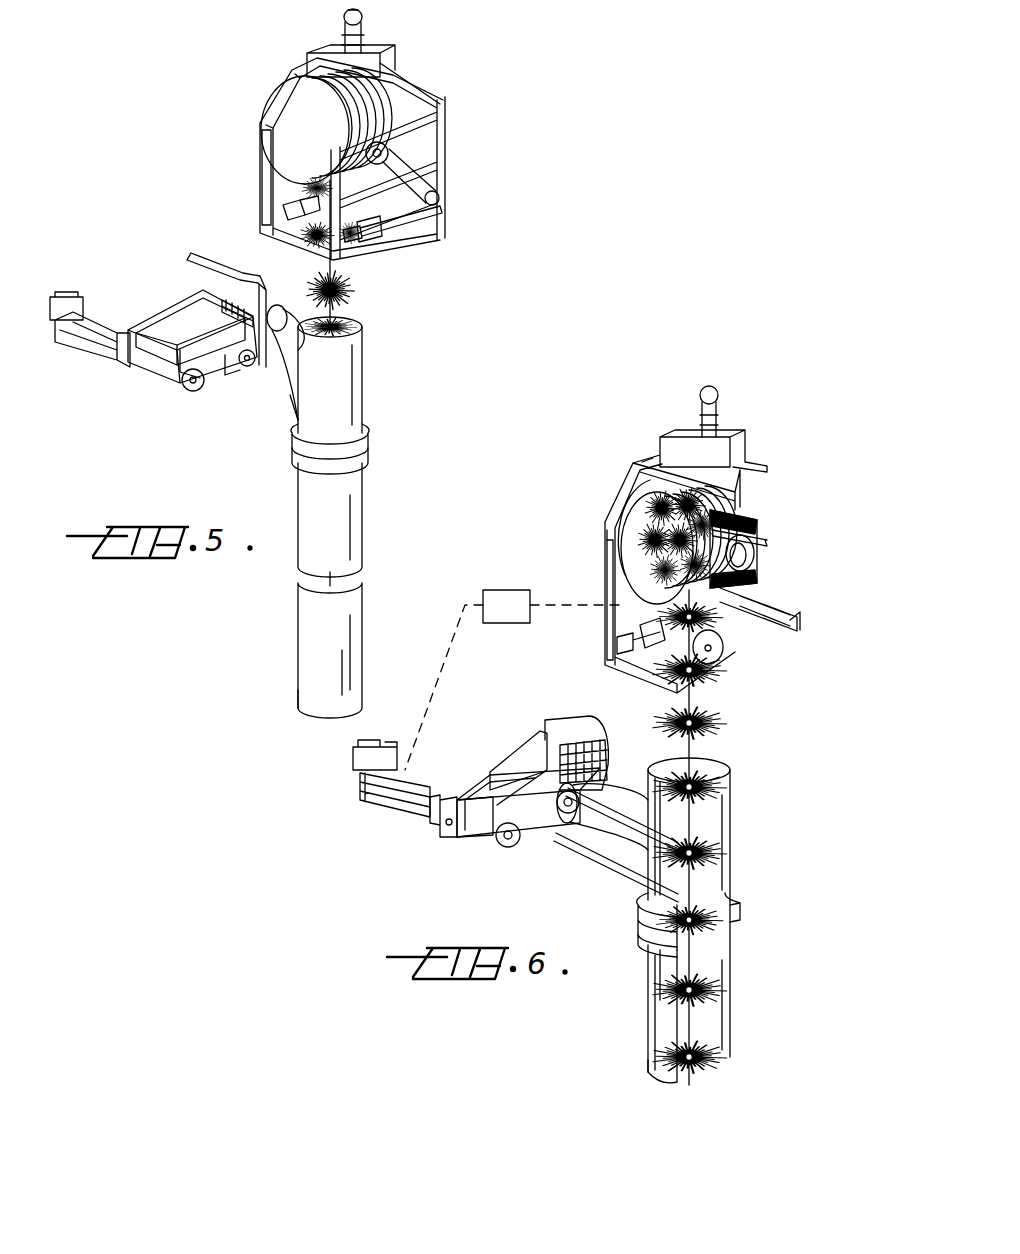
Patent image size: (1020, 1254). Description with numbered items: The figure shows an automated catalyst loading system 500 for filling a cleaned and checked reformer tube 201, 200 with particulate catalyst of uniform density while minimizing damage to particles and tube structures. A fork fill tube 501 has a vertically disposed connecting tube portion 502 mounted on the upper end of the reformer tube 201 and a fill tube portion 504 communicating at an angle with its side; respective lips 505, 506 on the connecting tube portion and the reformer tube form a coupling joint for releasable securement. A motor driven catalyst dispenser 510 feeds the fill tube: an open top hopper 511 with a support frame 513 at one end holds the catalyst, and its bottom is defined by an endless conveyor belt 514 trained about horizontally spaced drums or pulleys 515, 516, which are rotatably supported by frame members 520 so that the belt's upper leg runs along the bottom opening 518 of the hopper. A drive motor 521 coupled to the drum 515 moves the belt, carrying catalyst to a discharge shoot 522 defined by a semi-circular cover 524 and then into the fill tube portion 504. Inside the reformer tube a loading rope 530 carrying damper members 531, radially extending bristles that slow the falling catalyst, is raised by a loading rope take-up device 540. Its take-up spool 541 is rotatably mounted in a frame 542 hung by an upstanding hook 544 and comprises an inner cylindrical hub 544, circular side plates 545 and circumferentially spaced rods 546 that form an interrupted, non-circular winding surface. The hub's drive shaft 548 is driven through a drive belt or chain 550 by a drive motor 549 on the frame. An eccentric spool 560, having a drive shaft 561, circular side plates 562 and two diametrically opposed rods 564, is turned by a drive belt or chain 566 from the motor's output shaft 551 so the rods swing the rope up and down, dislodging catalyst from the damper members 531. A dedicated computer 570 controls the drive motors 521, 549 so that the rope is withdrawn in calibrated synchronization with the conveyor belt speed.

In FIG. 5, the reformer tube 200 is at (290, 645).
In FIG. 6, the reformer tube 200 is at (642, 1003).
In FIG. 5, the reformer tube 201 is at (310, 480).
In FIG. 6, the reformer tube 201 is at (725, 965).
In FIG. 6, the automated catalyst loading system 500 is at (607, 498).
In FIG. 5, the fork fill tube 501 is at (285, 425).
In FIG. 6, the fork fill tube 501 is at (632, 889).
In FIG. 5, the vertical connecting tube portion 502 is at (358, 380).
In FIG. 6, the vertical connecting tube portion 502 is at (715, 810).
In FIG. 5, the fill tube portion 504 is at (288, 395).
In FIG. 6, the fill tube portion 504 is at (617, 843).
In FIG. 5, the lip 505 is at (370, 434).
In FIG. 6, the lip 505 is at (735, 907).
In FIG. 5, the lip 506 is at (368, 460).
In FIG. 6, the lip 506 is at (738, 922).
In FIG. 5, the catalyst dispenser 510 is at (185, 262).
In FIG. 6, the catalyst dispenser 510 is at (516, 722).
In FIG. 5, the hopper 511 is at (168, 323).
In FIG. 6, the hopper 511 is at (485, 815).
In FIG. 5, the support frame 513 is at (204, 263).
In FIG. 6, the endless conveyor belt 514 is at (500, 790).
In FIG. 5, the drum or pulley 515 is at (188, 380).
In FIG. 6, the drum or pulley 515 is at (510, 849).
In FIG. 6, the drum or pulley 516 is at (556, 812).
In FIG. 6, the bottom opening 518 is at (525, 755).
In FIG. 5, the frame members 520 is at (185, 355).
In FIG. 6, the frame members 520 is at (440, 825).
In FIG. 5, the drive motor 521 is at (103, 318).
In FIG. 6, the drive motor 521 is at (377, 778).
In FIG. 6, the discharge shoot 522 is at (600, 780).
In FIG. 6, the semi-circular cover 524 is at (585, 728).
In FIG. 5, the loading rope 530 is at (313, 100).
In FIG. 6, the loading rope 530 is at (697, 697).
In FIG. 5, the damper members 531 is at (318, 280).
In FIG. 6, the damper members 531 is at (645, 520).
In FIG. 5, the loading rope take-up device 540 is at (278, 178).
In FIG. 6, the loading rope take-up device 540 is at (762, 526).
In FIG. 5, the take-up spool 541 is at (268, 145).
In FIG. 6, the take-up spool 541 is at (623, 548).
In FIG. 5, the frame 542 is at (447, 110).
In FIG. 6, the frame 542 is at (622, 488).
In FIG. 5, the hook / inner cylindrical hub 544 is at (343, 22).
In FIG. 6, the hook / inner cylindrical hub 544 is at (716, 395).
In FIG. 5, the circular side plates 545 is at (296, 110).
In FIG. 6, the circular side plates 545 is at (637, 560).
In FIG. 6, the circumferentially spaced rods 546 is at (769, 514).
In FIG. 5, the drive shaft 548 is at (386, 150).
In FIG. 5, the drive motor 549 is at (398, 215).
In FIG. 6, the drive motor 549 is at (775, 597).
In FIG. 5, the drive belt or chain 550 is at (425, 170).
In FIG. 5, the output shaft 551 is at (441, 200).
In FIG. 5, the eccentric spool 560 is at (283, 203).
In FIG. 6, the eccentric spool 560 is at (640, 628).
In FIG. 5, the drive shaft 561 is at (362, 234).
In FIG. 6, the circular side plates 562 is at (722, 642).
In FIG. 6, the diametrically opposed rods 564 is at (655, 650).
In FIG. 5, the drive belt or chain 566 is at (385, 234).
In FIG. 6, the computer 570 is at (505, 590).